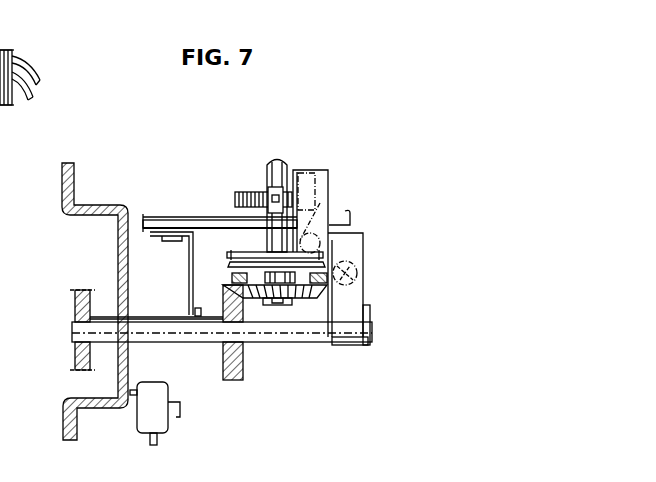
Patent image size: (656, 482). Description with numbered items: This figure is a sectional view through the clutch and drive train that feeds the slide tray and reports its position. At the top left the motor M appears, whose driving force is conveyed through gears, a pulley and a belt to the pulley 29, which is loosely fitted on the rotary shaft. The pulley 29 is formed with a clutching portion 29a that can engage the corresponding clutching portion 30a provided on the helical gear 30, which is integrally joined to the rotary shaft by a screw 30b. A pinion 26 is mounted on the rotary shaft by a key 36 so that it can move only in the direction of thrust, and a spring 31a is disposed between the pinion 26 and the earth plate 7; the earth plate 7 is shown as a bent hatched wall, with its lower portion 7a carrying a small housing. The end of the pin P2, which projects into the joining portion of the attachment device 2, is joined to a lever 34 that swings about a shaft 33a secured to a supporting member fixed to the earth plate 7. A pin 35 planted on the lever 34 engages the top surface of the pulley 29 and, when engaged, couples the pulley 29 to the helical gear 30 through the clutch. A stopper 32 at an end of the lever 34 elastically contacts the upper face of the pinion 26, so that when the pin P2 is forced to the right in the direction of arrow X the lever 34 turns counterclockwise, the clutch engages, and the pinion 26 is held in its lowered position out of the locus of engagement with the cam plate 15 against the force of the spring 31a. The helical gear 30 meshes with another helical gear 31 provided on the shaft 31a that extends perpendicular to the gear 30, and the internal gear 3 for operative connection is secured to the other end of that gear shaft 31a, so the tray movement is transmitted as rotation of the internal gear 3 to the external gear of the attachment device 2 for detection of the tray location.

The attachment device 2 is at (7, 61).
The motor M is at (14, 54).
The internal gear 3 is at (74, 305).
The earth plate 7 is at (170, 222).
The frame portion 7a is at (100, 405).
The cam plate 15 is at (272, 158).
The pinion 26 is at (298, 208).
The pulley 29 is at (234, 256).
The clutching portion 29a is at (236, 270).
The helical gear 30 is at (311, 298).
The clutching portion 30a is at (338, 287).
The screw 30b is at (270, 305).
The helical gear 31 is at (238, 368).
The gear shaft 31a is at (100, 315).
The stopper 32 is at (305, 172).
The shaft 33a is at (349, 262).
The lever 34 is at (355, 247).
The pin 35 is at (326, 222).
The key 36 is at (262, 198).
The arrow X is at (58, 333).
The pin P2 is at (73, 333).